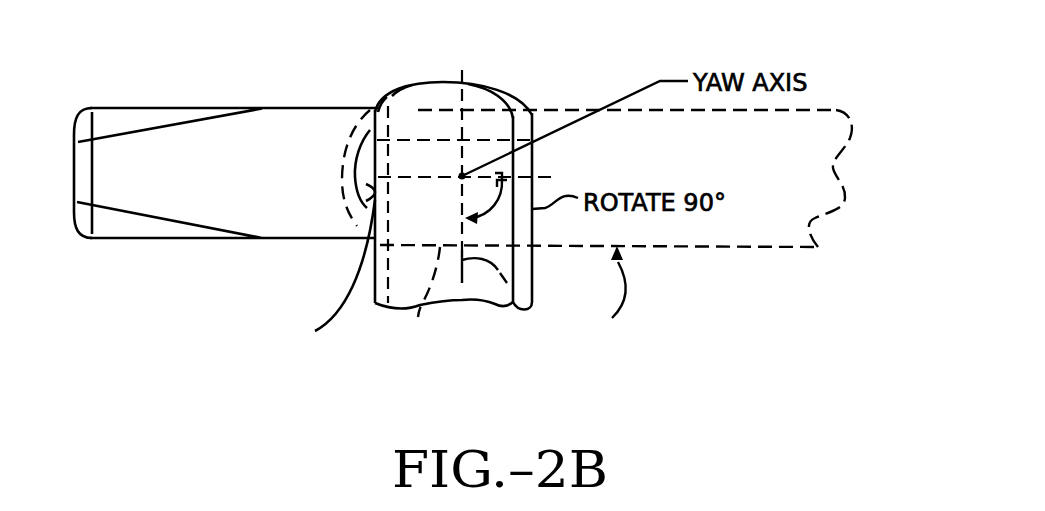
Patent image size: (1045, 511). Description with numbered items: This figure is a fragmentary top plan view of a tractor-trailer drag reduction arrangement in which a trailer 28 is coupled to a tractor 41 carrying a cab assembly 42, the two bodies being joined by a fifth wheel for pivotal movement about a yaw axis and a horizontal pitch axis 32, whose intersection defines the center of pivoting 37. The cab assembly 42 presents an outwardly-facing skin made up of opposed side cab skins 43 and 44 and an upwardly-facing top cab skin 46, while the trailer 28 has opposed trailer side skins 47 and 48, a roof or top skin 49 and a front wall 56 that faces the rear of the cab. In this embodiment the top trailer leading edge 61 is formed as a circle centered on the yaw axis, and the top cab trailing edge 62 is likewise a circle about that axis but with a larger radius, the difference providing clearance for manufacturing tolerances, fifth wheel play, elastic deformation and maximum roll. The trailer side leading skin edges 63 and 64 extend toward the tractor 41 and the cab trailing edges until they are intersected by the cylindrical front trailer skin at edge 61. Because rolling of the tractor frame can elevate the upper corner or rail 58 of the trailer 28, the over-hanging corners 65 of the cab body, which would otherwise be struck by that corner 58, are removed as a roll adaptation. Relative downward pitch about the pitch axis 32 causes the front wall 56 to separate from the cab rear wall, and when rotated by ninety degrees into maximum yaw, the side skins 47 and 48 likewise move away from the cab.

The trailer 28 is at (525, 296).
The pitch axis 32 is at (531, 288).
The center of pivoting 37 is at (462, 176).
The tractor 41 is at (178, 255).
The cab assembly 42 is at (243, 193).
The side cab skin 43 is at (323, 240).
The side cab skin 44 is at (242, 107).
The top cab skin 46 is at (324, 192).
The trailer side skin 47 is at (350, 153).
The trailer side skin 48 is at (496, 110).
The trailer top skin 49 is at (446, 135).
The front wall of trailer 56 is at (513, 108).
The upper corner of trailer 58 is at (373, 288).
The top trailer leading edge 61 is at (402, 112).
The top cab trailing edge 62 is at (357, 218).
The trailer side leading skin edge 63 is at (382, 116).
The trailer side leading skin edge 64 is at (522, 108).
The over-hanging corners of cab body 65 is at (437, 35).